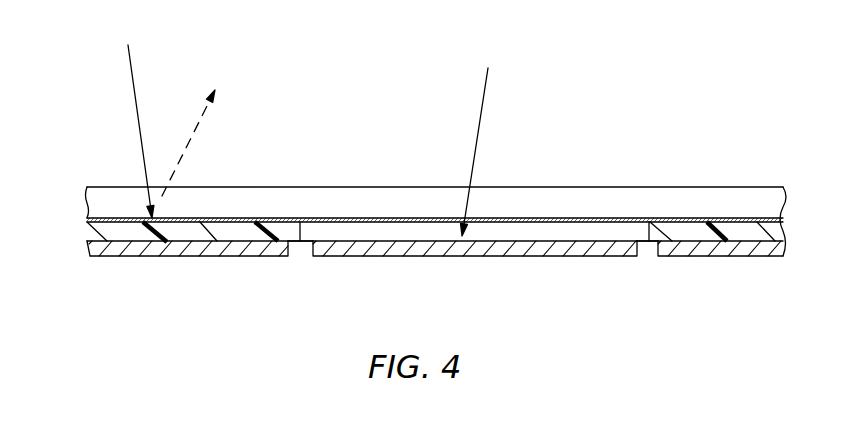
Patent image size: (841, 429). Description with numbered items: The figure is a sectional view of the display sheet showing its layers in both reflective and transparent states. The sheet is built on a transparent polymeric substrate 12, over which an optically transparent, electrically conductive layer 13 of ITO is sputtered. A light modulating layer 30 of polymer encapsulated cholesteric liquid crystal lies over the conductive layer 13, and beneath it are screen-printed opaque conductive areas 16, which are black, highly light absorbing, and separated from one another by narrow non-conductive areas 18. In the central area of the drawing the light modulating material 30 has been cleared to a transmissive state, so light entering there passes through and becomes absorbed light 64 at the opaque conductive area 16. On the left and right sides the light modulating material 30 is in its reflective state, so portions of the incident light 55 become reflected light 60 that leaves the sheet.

The substrate 12 is at (95, 193).
The transparent electrically conductive layer 13 is at (87, 222).
The light modulating layer 30 is at (88, 233).
The opaque conductive areas 16 is at (93, 247).
The non-conductive areas 18 is at (298, 252).
The incident light 55 is at (133, 84).
The reflected light 60 is at (190, 142).
The absorbed light 64 is at (483, 108).